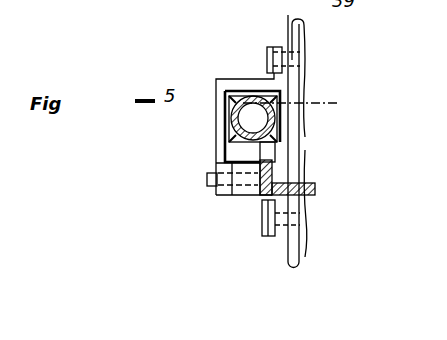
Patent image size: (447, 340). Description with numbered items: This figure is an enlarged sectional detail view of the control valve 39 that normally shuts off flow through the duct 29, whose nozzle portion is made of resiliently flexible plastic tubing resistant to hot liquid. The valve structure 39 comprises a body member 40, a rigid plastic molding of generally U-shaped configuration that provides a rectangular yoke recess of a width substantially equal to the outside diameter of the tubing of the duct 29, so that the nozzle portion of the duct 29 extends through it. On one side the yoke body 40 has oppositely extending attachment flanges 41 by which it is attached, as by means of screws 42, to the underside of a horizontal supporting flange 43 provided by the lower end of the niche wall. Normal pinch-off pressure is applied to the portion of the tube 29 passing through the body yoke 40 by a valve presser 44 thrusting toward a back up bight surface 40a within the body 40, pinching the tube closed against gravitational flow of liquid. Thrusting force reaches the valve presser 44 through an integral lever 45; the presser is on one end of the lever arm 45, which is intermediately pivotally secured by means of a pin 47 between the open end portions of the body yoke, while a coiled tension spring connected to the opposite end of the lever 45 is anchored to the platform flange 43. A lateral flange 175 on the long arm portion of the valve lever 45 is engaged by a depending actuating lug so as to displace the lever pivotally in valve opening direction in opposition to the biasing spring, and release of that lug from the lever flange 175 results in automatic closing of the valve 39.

The duct 29 is at (277, 121).
The control valve 39 is at (203, 149).
The body member 40 is at (240, 79).
The back up bight surface 40a is at (225, 103).
The attachment flanges 41 is at (280, 46).
The screws 42 is at (267, 56).
The horizontal supporting flange 43 is at (306, 46).
The valve presser 44 is at (238, 141).
The lever 45 is at (262, 180).
The pin 47 is at (207, 186).
The lateral flange 175 is at (318, 192).